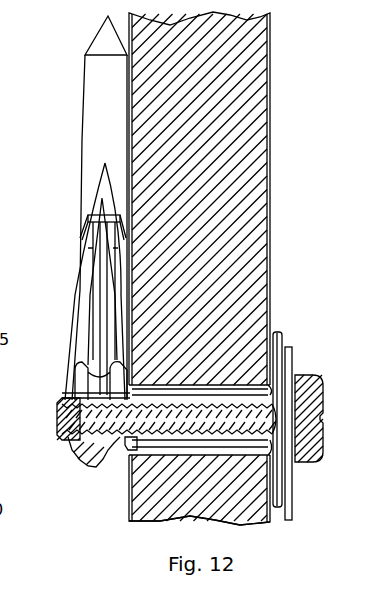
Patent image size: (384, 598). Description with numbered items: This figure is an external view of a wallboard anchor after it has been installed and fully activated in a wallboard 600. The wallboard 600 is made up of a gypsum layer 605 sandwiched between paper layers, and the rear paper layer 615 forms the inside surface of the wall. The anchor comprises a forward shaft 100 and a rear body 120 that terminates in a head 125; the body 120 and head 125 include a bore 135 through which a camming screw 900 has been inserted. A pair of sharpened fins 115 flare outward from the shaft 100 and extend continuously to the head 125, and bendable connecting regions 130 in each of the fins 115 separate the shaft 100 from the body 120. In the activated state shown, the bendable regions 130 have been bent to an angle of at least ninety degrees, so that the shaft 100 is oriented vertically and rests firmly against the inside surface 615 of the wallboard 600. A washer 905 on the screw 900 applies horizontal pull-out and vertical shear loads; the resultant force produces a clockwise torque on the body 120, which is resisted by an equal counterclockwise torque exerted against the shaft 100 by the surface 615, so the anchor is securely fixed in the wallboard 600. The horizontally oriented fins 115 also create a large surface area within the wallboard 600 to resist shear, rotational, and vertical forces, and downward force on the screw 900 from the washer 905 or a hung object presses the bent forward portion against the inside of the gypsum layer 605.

The shaft 100 is at (64, 208).
The sharpened fins 115 is at (95, 392).
The body 120 is at (182, 476).
The head 125 is at (278, 334).
The bendable connecting regions 130 is at (86, 459).
The bore 135 is at (124, 453).
The wallboard 600 is at (168, 285).
The gypsum layer 605 is at (235, 525).
The rear paper layer 615 is at (128, 328).
The camming screw 900 is at (309, 463).
The washer 905 is at (291, 362).